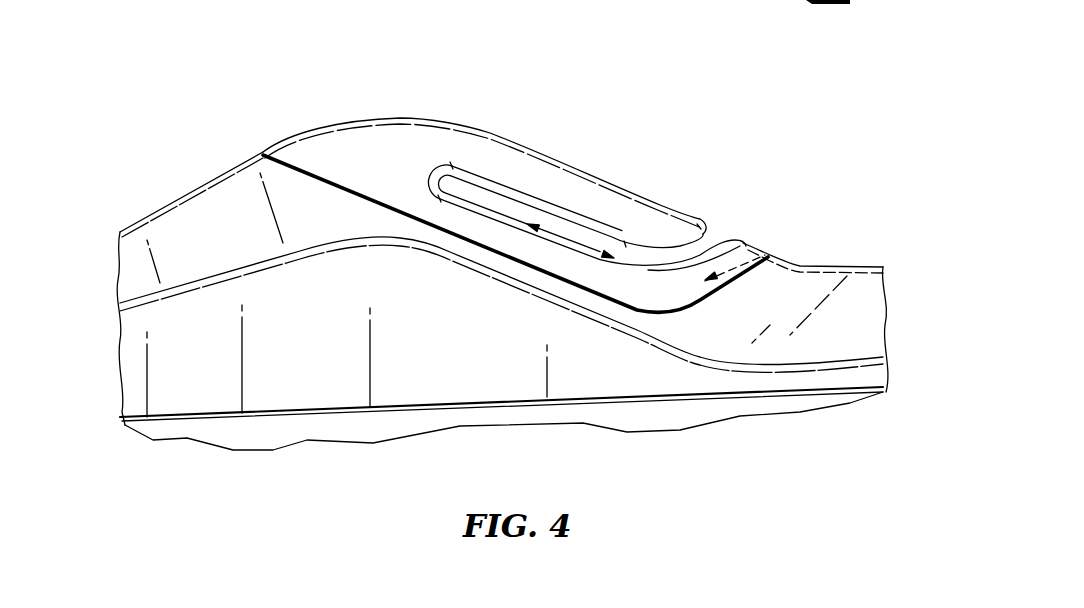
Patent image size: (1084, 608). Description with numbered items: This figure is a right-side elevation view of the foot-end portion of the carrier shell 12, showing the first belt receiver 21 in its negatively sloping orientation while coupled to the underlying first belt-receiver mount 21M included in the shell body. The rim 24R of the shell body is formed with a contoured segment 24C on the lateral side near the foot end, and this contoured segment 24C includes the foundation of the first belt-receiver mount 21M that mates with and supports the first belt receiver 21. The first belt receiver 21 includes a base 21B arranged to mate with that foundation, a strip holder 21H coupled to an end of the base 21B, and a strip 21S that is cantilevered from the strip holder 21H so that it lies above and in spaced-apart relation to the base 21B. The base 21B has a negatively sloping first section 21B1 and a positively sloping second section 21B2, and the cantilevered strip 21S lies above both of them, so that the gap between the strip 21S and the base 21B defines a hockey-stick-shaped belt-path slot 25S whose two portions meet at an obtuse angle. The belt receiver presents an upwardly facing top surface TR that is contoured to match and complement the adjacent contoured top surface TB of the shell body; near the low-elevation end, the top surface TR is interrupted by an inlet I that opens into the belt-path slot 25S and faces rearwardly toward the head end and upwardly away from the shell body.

The turbine component 12 is at (152, 62).
The first belt receiver 21 is at (510, 130).
The strip holder 21H is at (332, 165).
The first belt-receiver mount 21M is at (357, 172).
The strip 21S is at (588, 207).
The base 21B is at (393, 217).
The negatively sloping first section 21B1 is at (456, 200).
The positively sloping second section 21B2 is at (671, 273).
The contoured segment 24C is at (182, 197).
The rim 24R is at (132, 220).
The belt-path slot 25S is at (548, 243).
The contoured top surface of shell body TB is at (908, 177).
The top surface of belt receiver TR is at (800, 258).
The inlet I is at (725, 227).